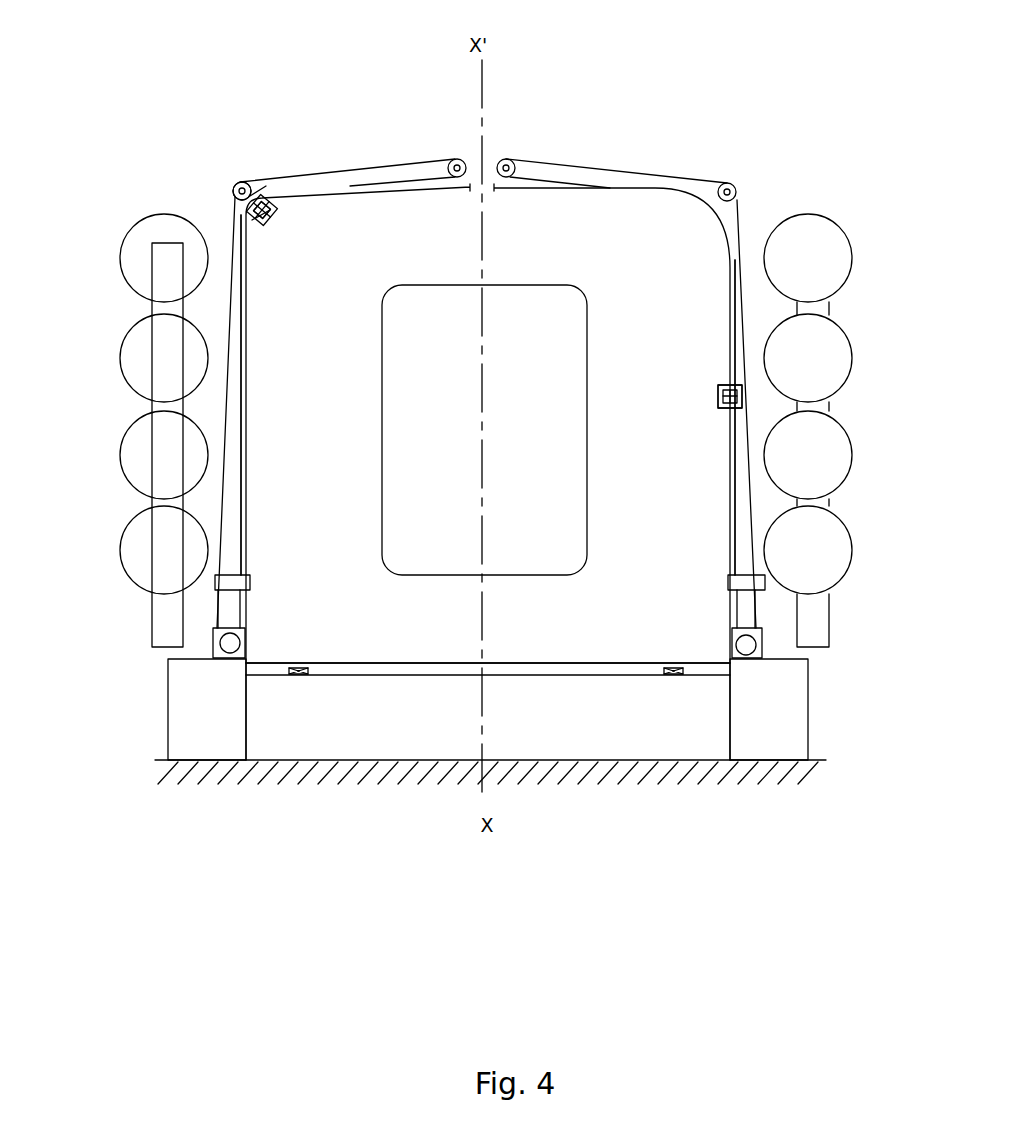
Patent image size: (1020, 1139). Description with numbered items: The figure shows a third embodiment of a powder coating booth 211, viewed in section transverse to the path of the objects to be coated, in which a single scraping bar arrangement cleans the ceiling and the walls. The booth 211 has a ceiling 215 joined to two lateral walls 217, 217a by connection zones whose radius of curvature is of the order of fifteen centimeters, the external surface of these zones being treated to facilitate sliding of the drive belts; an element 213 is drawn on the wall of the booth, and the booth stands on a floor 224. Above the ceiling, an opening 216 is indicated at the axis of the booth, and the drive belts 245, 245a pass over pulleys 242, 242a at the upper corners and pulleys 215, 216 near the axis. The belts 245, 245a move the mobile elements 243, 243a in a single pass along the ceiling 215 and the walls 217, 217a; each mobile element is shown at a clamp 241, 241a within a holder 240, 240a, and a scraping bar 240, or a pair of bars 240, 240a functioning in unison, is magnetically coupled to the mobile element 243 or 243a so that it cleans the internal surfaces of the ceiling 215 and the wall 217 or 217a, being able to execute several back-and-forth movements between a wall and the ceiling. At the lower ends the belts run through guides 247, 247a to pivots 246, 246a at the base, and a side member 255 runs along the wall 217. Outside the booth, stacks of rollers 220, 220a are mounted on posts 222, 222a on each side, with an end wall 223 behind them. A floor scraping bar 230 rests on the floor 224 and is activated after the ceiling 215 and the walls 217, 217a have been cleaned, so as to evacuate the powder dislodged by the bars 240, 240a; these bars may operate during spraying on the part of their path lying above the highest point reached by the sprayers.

The booth 211 is at (652, 147).
The window 213 is at (484, 430).
The ceiling 215 is at (445, 167).
The right pulley 216 is at (490, 160).
The wall 217 is at (232, 405).
The wall 217a is at (727, 498).
The left rollers 220 is at (155, 216).
The right rollers 220a is at (828, 220).
The left post 222 is at (158, 634).
The right post 222a is at (828, 614).
The cab body 223 is at (488, 472).
The floor 224 is at (548, 680).
The scraping bar 230 is at (425, 662).
The scraping bar 240 is at (270, 226).
The scraping bar 240a is at (716, 388).
The left clamp block 241 is at (280, 210).
The right clamp block 241a is at (716, 402).
The left upper pulley 242 is at (250, 183).
The right upper pulley 242a is at (746, 404).
The mobile element 243 is at (236, 205).
The mobile element 243a is at (746, 392).
The drive belt 245 is at (312, 166).
The drive belt 245a is at (758, 502).
The left pivot 246 is at (216, 636).
The right pivot 246a is at (738, 634).
The left bracket 247 is at (216, 577).
The right bracket 247a is at (768, 578).
The cab side member 255 is at (222, 480).